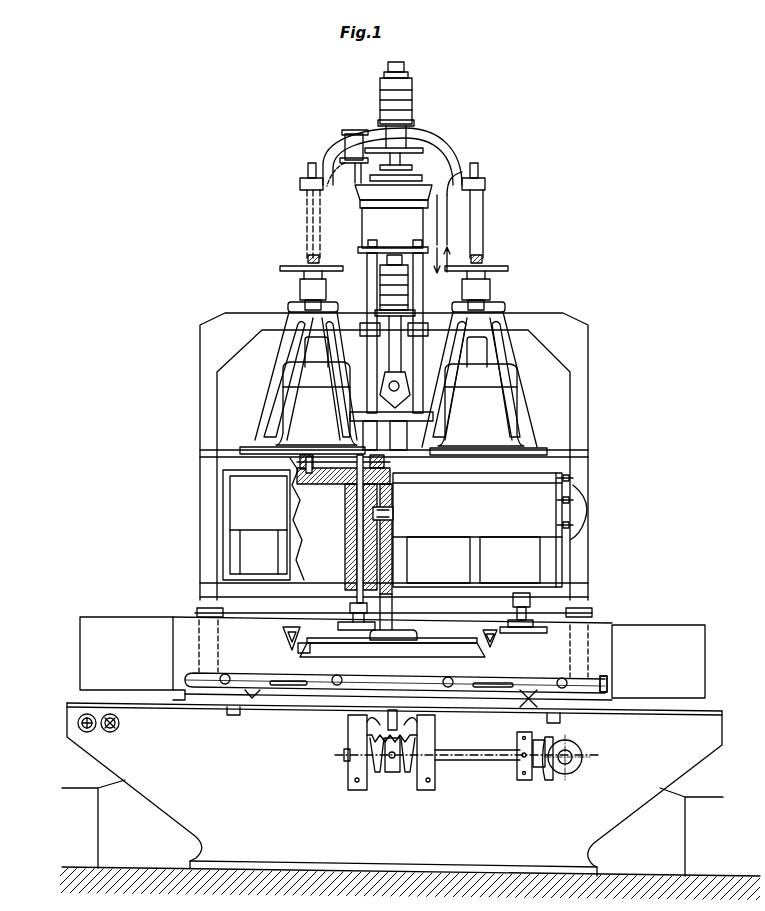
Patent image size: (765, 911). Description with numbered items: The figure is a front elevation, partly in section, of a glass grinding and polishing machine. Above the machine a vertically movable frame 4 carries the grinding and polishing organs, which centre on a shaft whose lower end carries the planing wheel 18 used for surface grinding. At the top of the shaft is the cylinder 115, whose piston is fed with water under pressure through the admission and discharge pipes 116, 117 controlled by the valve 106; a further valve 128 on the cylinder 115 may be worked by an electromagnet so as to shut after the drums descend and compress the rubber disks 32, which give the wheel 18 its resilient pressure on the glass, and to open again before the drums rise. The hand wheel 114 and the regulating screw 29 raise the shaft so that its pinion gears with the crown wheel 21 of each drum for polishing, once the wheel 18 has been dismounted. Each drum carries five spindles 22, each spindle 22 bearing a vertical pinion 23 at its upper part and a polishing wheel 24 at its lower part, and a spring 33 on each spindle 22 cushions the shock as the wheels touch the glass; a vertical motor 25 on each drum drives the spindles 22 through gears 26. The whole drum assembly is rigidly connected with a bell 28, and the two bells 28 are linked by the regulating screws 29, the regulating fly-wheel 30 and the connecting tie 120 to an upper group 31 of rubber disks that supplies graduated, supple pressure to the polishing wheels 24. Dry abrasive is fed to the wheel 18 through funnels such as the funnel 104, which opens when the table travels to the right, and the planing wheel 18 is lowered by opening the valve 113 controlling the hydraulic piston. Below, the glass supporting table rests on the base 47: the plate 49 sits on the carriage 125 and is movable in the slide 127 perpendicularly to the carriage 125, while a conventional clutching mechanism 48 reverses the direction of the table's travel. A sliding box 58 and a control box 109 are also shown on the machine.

The frame 4 is at (567, 337).
The planing wheel 18 is at (340, 643).
The crown wheel 21 is at (383, 495).
The spindle 22 is at (357, 520).
The vertical pinion 23 is at (350, 490).
The polishing wheel 24 is at (337, 612).
The vertical motor 25 is at (290, 404).
The gear 26 is at (505, 407).
The bell 28 is at (285, 318).
The regulating screw 29 is at (312, 257).
The regulating fly-wheel 30 is at (283, 268).
The upper group of rubber disks 31 is at (399, 94).
The rubber disks 32 is at (398, 287).
The spring 33 is at (373, 565).
The base 47 is at (677, 740).
The clutching mechanism 48 is at (427, 758).
The plate 49 is at (590, 680).
The slide housing 58 is at (682, 633).
The funnel 104 is at (280, 633).
The valve 106 is at (492, 637).
The control box 109 is at (390, 515).
The valve 113 is at (78, 722).
The hand wheel 114 is at (367, 308).
The cylinder 115 is at (387, 220).
The admission pipe 116 is at (447, 237).
The discharge pipe 117 is at (447, 212).
The connecting tie 120 is at (437, 150).
The carriage 125 is at (200, 693).
The slide 127 is at (533, 693).
The valve 128 is at (352, 141).